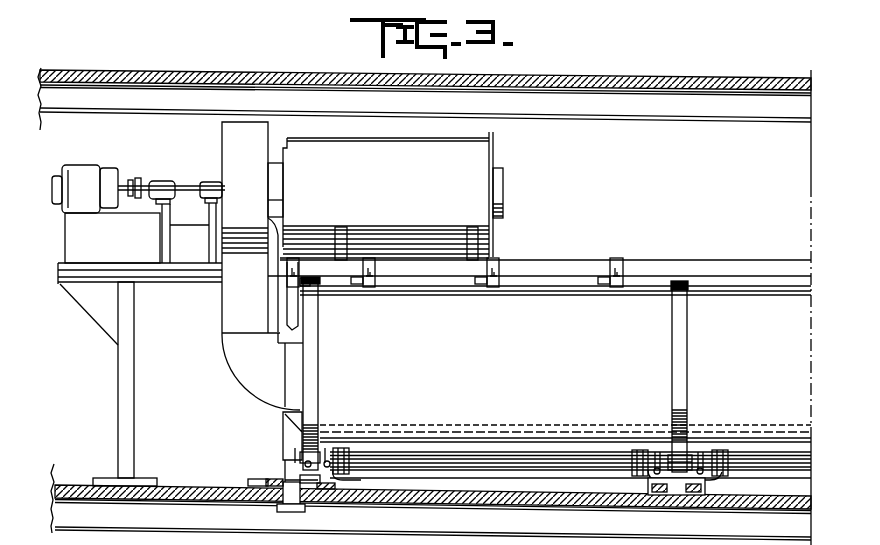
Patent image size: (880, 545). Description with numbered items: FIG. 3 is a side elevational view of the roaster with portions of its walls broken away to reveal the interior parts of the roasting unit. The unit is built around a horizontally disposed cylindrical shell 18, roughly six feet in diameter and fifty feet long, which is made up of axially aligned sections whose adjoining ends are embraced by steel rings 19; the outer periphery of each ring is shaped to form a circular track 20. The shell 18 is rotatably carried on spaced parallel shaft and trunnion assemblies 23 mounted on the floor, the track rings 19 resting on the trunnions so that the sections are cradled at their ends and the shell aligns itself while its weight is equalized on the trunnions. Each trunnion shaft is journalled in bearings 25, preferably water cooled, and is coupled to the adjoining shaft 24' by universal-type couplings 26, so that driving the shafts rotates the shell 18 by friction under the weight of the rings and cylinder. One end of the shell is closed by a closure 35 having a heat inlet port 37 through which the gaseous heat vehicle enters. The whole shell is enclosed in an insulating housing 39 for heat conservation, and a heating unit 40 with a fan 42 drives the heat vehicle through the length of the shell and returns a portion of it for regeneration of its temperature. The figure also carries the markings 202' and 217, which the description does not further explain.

The cylindrical shell 18 is at (555, 382).
The rings 19 is at (672, 318).
The circular tracks 20 is at (683, 350).
The shaft and trunnion assemblies 23 is at (315, 453).
The adjoining shaft 24' is at (570, 443).
The bearings 25 is at (680, 474).
The couplings 26 is at (724, 452).
The closure 35 is at (310, 403).
The heat inlet port 37 is at (300, 373).
The housing 39 is at (780, 261).
The heating unit 40 is at (386, 196).
The fan 42 is at (222, 152).
The damper 202' is at (520, 192).
The support post 217 is at (222, 313).